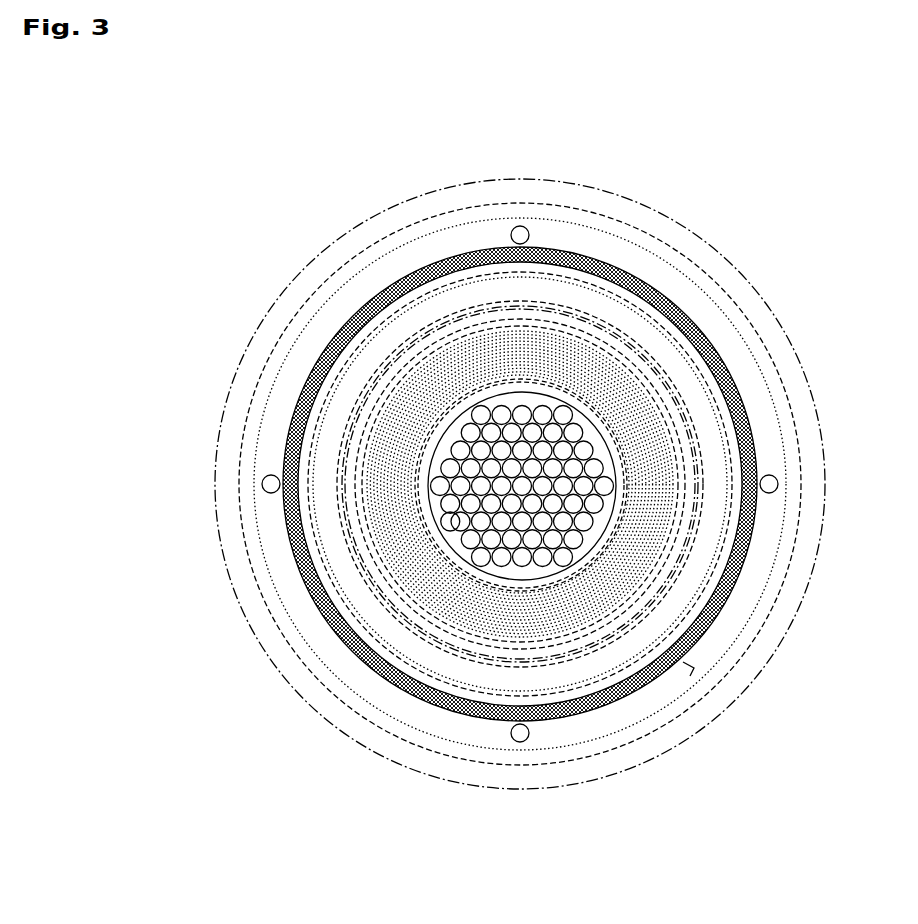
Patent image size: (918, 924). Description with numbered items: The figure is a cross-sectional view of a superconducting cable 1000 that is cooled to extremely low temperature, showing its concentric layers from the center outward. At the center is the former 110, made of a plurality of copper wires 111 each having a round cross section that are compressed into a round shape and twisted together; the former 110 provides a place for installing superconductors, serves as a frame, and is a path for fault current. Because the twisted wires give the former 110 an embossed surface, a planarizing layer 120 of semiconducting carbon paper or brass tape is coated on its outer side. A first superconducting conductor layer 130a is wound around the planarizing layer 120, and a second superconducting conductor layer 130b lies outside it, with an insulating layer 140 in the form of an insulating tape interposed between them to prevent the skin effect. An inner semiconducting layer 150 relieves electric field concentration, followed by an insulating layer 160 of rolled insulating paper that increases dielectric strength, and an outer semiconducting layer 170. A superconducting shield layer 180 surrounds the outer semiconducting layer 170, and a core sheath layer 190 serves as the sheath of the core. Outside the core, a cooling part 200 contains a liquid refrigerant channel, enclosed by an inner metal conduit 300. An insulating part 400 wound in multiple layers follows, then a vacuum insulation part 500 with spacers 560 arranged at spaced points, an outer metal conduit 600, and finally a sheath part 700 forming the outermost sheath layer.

The superconducting cable 1000 is at (270, 169).
The former 110 is at (447, 528).
The copper wires 111 is at (452, 522).
The planarizing layer 120 is at (417, 502).
The first superconducting conductor layer 130a is at (420, 455).
The second superconducting conductor layer 130b is at (480, 393).
The insulating layer 140 is at (447, 420).
The inner semiconducting layer 150 is at (523, 380).
The insulating layer 160 is at (587, 347).
The outer semiconducting layer 170 is at (633, 357).
The superconducting shield layer 180 is at (668, 385).
The core sheath layer 190 is at (698, 438).
The cooling part 200 is at (722, 455).
The inner metal conduit 300 is at (732, 543).
The insulating part 400 is at (715, 612).
The vacuum insulation part 500 is at (693, 670).
The spacers 560 is at (520, 742).
The outer metal conduit 600 is at (602, 745).
The sheath part 700 is at (558, 775).